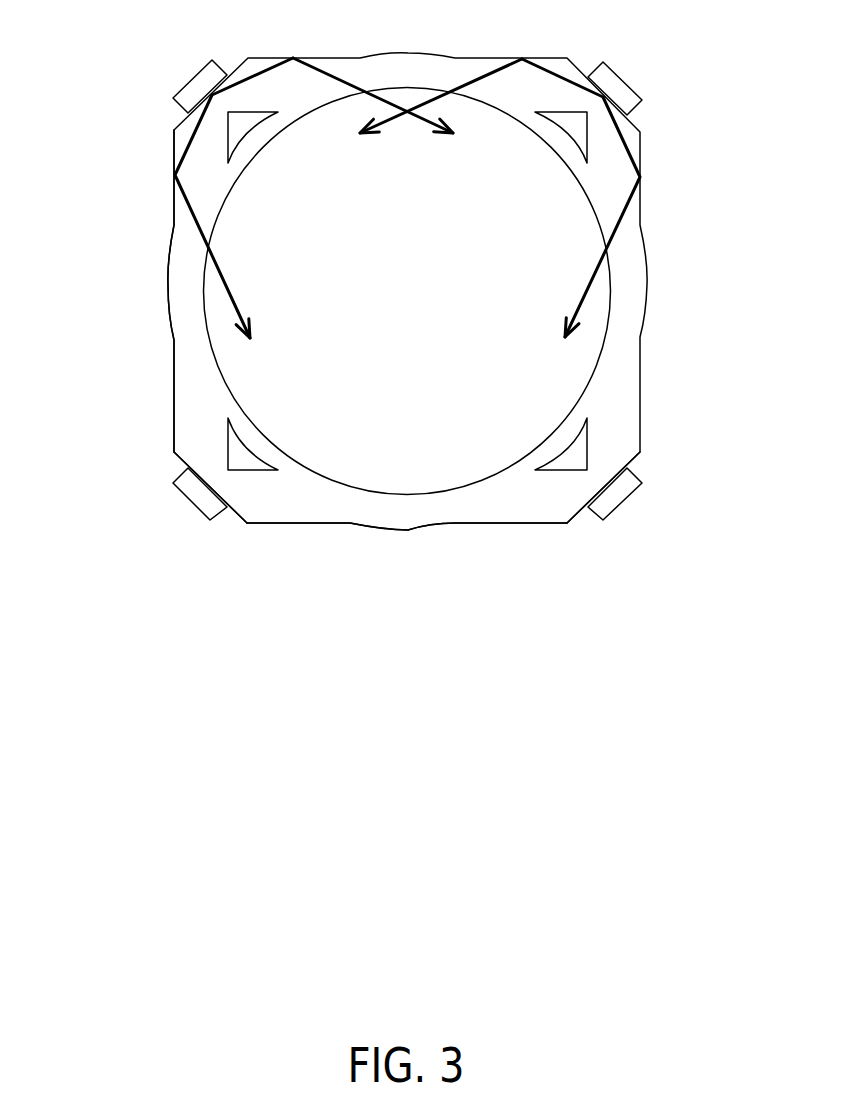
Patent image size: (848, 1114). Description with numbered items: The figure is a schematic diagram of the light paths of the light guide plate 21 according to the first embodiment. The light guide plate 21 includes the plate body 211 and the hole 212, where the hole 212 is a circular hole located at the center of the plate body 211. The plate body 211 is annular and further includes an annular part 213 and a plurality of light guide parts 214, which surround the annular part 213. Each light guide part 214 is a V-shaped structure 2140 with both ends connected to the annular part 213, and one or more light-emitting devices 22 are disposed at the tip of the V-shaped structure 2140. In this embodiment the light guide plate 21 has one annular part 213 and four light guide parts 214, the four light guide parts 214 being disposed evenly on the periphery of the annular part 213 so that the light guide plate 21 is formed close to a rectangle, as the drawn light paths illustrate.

The light guide plate 21 is at (328, 627).
The plate body 211 is at (425, 528).
The hole 212 is at (382, 422).
The annular part 213 is at (193, 302).
The light guide part 214 is at (200, 438).
The V-shaped structure 2140 is at (248, 500).
The light-emitting device 22 is at (198, 88).